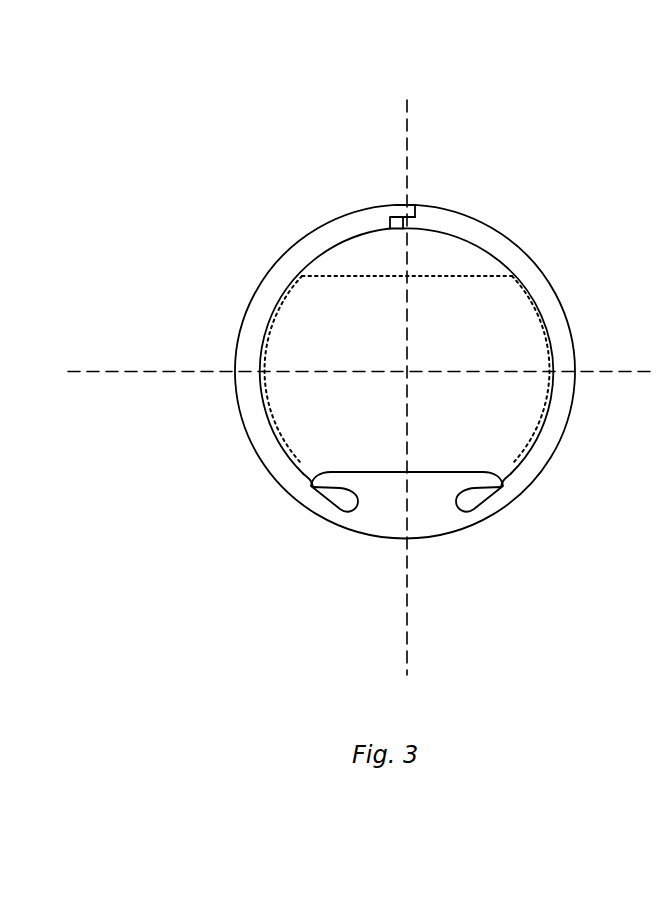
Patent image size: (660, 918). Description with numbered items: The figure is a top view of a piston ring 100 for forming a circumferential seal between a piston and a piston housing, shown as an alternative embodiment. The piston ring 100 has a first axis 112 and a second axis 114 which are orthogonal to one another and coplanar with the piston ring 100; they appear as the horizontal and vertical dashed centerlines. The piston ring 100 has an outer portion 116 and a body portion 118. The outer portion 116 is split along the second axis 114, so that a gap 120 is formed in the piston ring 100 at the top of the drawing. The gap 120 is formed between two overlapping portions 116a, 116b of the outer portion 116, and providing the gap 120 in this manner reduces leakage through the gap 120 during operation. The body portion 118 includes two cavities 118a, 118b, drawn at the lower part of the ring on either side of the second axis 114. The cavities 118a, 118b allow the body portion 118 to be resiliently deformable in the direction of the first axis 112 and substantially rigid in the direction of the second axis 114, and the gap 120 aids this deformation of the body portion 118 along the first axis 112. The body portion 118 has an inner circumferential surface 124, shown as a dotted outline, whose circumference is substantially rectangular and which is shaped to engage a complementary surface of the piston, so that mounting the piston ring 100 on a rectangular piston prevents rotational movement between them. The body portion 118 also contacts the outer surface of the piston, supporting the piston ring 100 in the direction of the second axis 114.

The piston ring 100 is at (213, 193).
The first axis 112 is at (153, 371).
The second axis 114 is at (408, 113).
The outer portion 116 is at (308, 241).
The overlapping portion 116a is at (393, 204).
The overlapping portion 116b is at (413, 222).
The body portion 118 is at (401, 552).
The cavity 118a is at (326, 487).
The cavity 118b is at (483, 487).
The gap 120 is at (413, 207).
The inner circumferential surface 124 is at (537, 306).